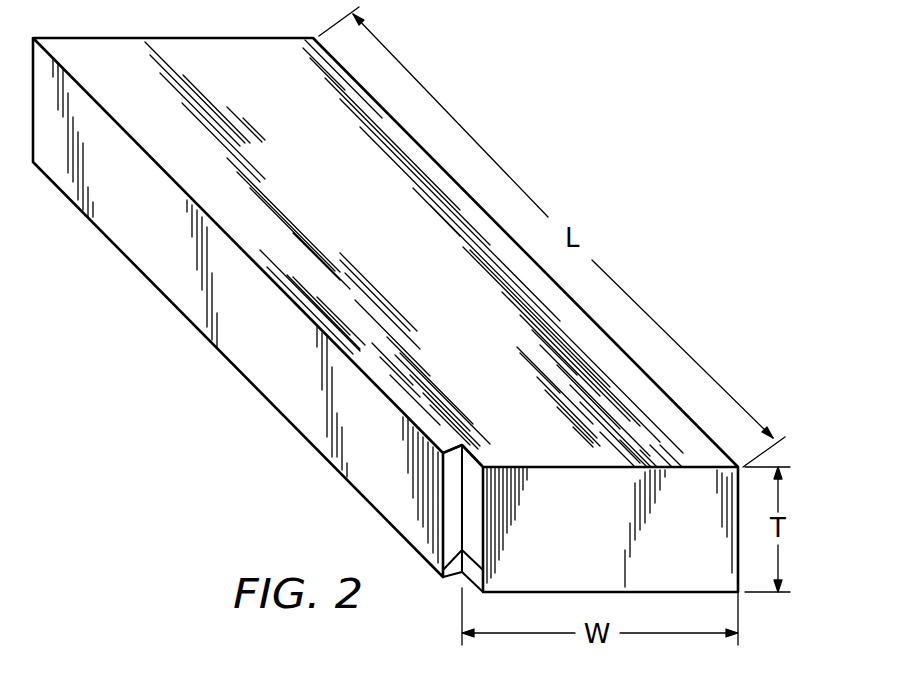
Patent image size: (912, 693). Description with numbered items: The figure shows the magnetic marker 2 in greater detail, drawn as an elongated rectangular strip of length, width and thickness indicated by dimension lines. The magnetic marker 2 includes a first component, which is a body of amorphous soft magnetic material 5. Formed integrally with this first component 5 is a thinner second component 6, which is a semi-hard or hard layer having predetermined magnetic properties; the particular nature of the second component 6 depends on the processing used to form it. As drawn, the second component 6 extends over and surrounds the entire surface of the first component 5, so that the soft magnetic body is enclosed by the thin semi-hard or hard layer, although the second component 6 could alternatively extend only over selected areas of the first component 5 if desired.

The magnetic marker 2 is at (385, 326).
The body of amorphous soft magnetic material 5 is at (462, 500).
The second component 6 is at (465, 462).